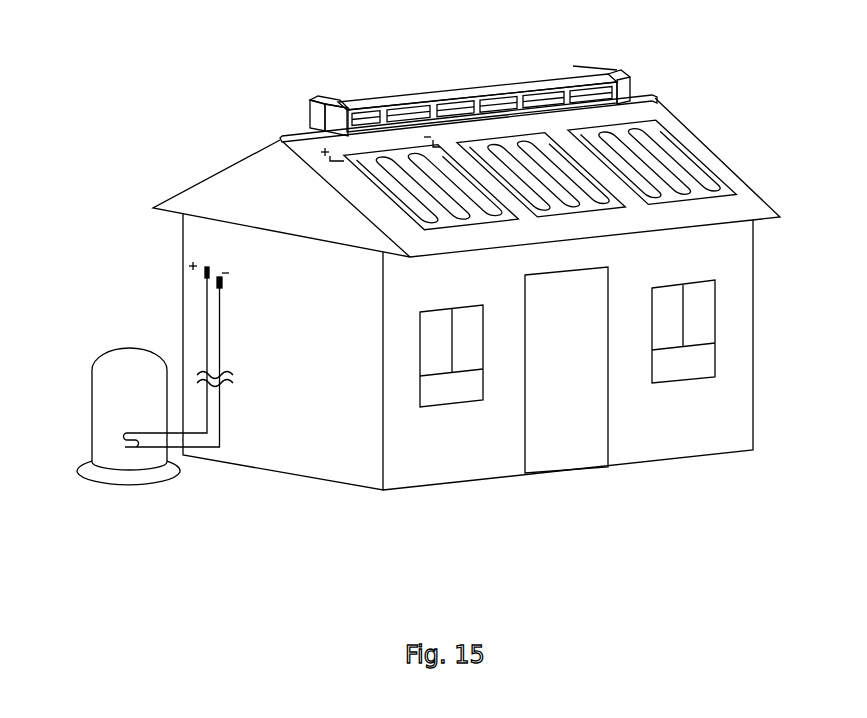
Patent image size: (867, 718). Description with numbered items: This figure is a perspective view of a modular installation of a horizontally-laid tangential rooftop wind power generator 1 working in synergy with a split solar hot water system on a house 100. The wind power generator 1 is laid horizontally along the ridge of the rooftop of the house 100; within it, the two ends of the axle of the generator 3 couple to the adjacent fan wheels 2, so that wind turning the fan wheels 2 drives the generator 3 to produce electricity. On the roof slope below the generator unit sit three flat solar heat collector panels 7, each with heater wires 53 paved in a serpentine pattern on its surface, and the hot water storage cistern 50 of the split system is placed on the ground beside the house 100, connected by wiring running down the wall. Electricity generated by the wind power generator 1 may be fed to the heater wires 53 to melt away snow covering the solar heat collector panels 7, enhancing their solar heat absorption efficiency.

The horizontally-laid tangential rooftop wind power generator 1 is at (321, 96).
The fan wheel 2 is at (552, 79).
The generator 3 is at (462, 82).
The flat solar heat collector panel 7 is at (692, 142).
The heater wire 53 is at (711, 166).
The hot water storage cistern 50 is at (125, 361).
The house 100 is at (317, 428).